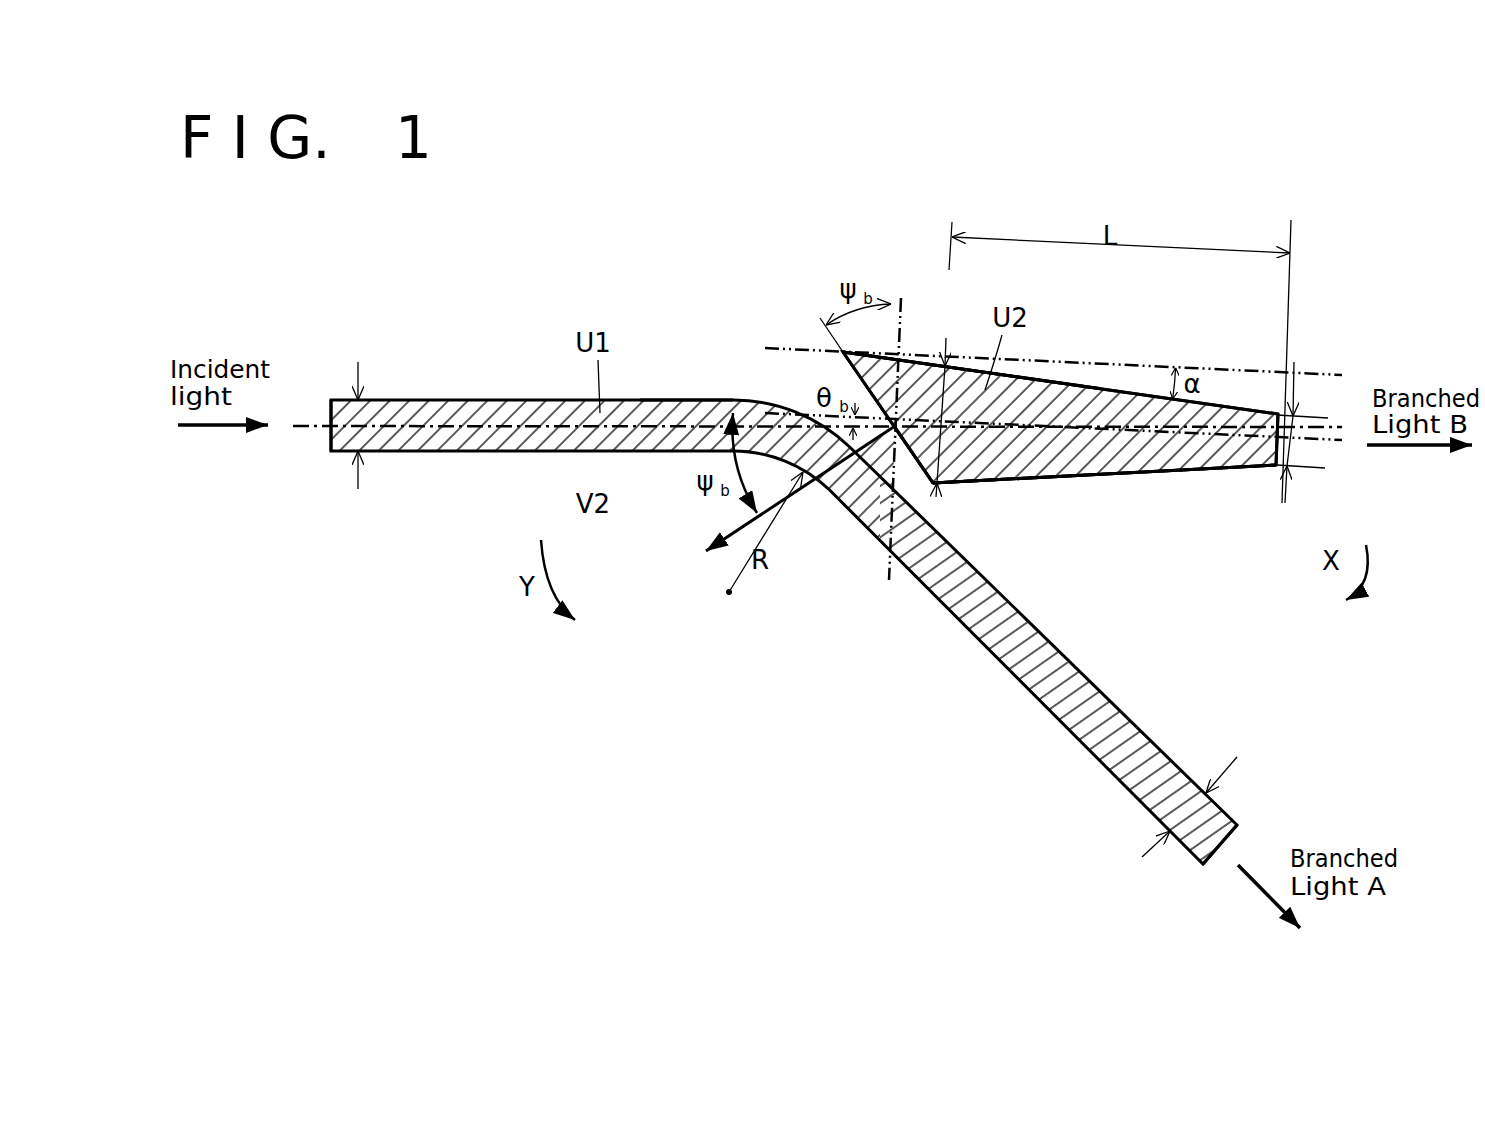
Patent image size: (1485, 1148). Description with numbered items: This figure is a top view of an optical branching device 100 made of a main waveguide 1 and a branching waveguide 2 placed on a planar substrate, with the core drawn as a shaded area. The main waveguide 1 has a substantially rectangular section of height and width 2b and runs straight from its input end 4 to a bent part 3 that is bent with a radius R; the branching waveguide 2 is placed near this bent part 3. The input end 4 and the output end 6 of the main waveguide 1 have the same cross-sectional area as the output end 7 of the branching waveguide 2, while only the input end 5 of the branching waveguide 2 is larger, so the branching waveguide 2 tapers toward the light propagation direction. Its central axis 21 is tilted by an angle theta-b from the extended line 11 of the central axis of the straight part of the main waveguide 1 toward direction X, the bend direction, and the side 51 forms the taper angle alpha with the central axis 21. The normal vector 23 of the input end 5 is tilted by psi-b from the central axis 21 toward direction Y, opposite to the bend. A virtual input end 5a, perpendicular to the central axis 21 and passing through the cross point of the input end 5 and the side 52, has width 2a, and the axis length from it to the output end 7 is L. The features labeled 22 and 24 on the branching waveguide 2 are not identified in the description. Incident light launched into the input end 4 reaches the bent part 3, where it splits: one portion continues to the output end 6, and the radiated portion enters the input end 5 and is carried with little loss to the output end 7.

The optical branching device 100 is at (1377, 204).
The main waveguide 1 is at (457, 405).
The branching waveguide 2 is at (1131, 393).
The width of the virtual input end 2a is at (943, 400).
The waveguide height and width 2b is at (831, 592).
The bent part 3 is at (676, 402).
The input end 4 is at (332, 432).
The input end of the branching waveguide 5 is at (907, 465).
The virtual input end 5a is at (997, 481).
The output end of the main waveguide 6 is at (1221, 853).
The output end of the branching waveguide 7 is at (1290, 448).
The extended line of the central axis 11 is at (525, 417).
The central axis of the branching waveguide 21 is at (1250, 437).
The slanted input end face of second waveguide 22 is at (902, 331).
The normal vector 23 is at (750, 523).
The upper side face of second waveguide 24 is at (1240, 372).
The side of the branching waveguide 51 is at (1092, 388).
The side of the branching waveguide 52 is at (1068, 470).